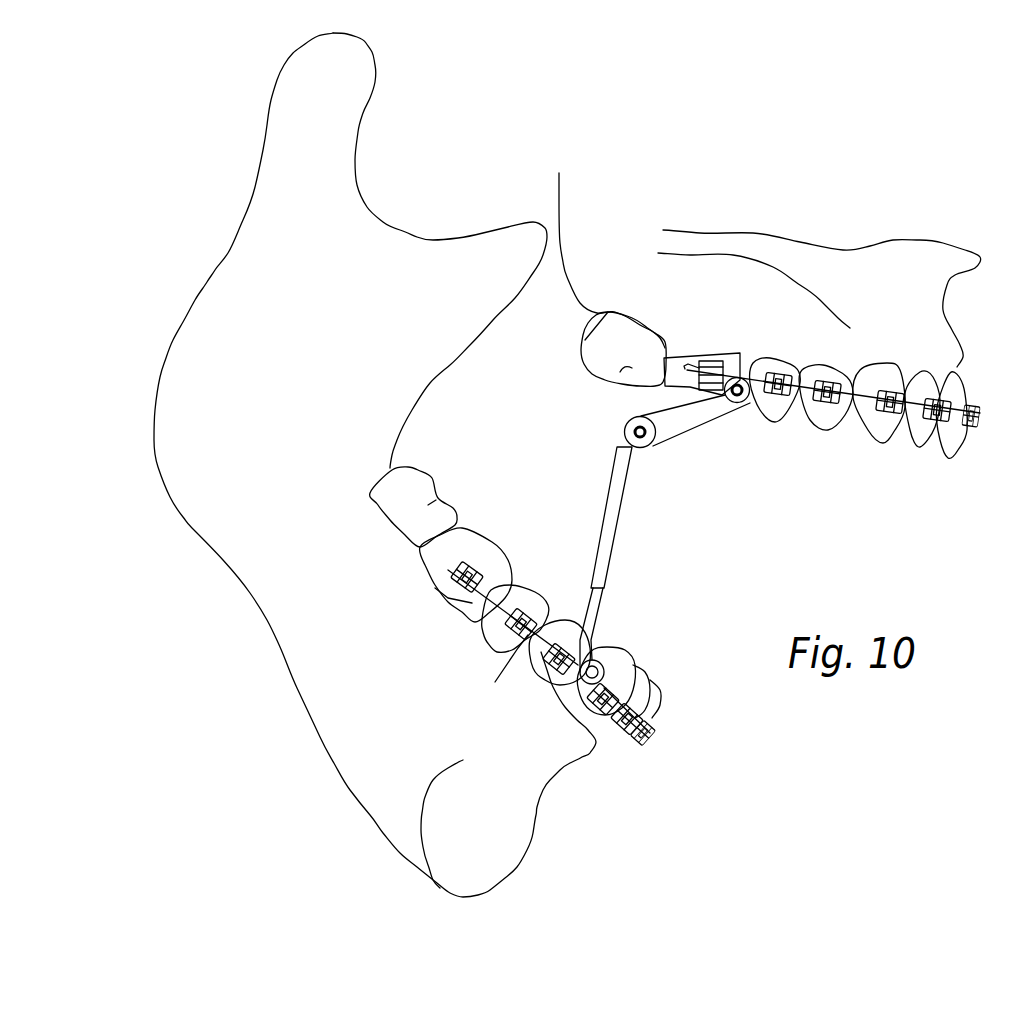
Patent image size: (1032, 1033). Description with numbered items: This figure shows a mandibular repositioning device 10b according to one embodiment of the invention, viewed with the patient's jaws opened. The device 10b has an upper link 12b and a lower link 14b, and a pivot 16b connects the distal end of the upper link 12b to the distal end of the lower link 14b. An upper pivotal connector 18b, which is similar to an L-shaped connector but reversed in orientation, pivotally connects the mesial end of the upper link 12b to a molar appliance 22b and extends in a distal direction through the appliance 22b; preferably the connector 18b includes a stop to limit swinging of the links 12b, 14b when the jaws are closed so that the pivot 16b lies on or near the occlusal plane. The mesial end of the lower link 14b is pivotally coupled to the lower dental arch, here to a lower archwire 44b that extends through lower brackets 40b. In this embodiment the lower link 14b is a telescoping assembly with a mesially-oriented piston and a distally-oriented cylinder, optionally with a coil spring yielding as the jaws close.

The device 10b is at (656, 493).
The upper link 12b is at (693, 413).
The lower link 14b is at (613, 545).
The pivot 16b is at (625, 428).
The upper pivotal connector 18b is at (736, 377).
The molar appliance 22b is at (713, 360).
The lower brackets 40b is at (543, 657).
The lower archwire 44b is at (475, 603).